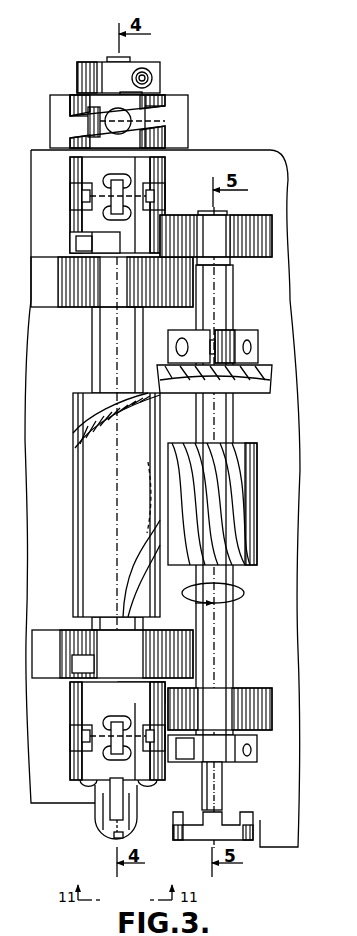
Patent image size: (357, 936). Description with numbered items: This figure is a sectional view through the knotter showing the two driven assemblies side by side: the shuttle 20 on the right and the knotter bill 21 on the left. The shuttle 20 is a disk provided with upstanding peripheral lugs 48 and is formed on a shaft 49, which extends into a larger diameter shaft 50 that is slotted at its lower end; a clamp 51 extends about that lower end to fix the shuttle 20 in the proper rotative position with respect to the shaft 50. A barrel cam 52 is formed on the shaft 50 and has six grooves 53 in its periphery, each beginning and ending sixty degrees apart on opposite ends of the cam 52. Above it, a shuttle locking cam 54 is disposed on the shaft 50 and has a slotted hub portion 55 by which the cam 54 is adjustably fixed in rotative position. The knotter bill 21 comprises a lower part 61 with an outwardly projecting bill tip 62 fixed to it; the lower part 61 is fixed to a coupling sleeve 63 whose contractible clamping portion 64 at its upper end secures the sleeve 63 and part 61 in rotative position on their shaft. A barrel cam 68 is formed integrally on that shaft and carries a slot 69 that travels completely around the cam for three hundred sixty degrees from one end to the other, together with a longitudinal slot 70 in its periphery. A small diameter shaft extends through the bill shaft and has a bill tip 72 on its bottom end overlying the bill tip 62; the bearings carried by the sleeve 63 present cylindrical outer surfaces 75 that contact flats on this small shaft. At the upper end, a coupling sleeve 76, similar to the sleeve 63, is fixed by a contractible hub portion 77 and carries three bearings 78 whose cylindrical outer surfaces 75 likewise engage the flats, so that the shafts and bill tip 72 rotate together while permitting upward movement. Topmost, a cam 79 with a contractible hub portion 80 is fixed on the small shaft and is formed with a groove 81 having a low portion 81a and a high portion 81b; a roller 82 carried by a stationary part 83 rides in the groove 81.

The shuttle 20 is at (205, 840).
The knotter bill 21 is at (92, 827).
The upstanding peripheral lugs 48 is at (238, 812).
The shaft 49 is at (222, 781).
The larger diameter shaft 50 is at (233, 637).
The clamp 51 is at (258, 753).
The barrel cam 52 is at (260, 555).
The grooves 53 is at (237, 497).
The shuttle locking cam 54 is at (276, 386).
The slotted hub portion 55 is at (240, 338).
The lower part 61 is at (137, 808).
The bill tip 62 is at (112, 841).
The coupling sleeve 63 is at (72, 708).
The contractible clamping portion 64 is at (130, 690).
The barrel cam 68 is at (83, 515).
The slot 69 is at (76, 448).
The longitudinal slot 70 is at (145, 478).
The bill tip 72 is at (125, 828).
The cylindrical outer surfaces 75 is at (105, 748).
The coupling sleeve 76 is at (165, 177).
The contractible hub portion 77 is at (105, 243).
The bearings 78 is at (105, 209).
The cam 79 is at (72, 100).
The contractible hub portion 80 is at (157, 69).
The groove 81 is at (90, 142).
The low portion 81a is at (80, 124).
The high portion 81b is at (160, 112).
The roller 82 is at (150, 122).
The stationary part 83 is at (190, 108).